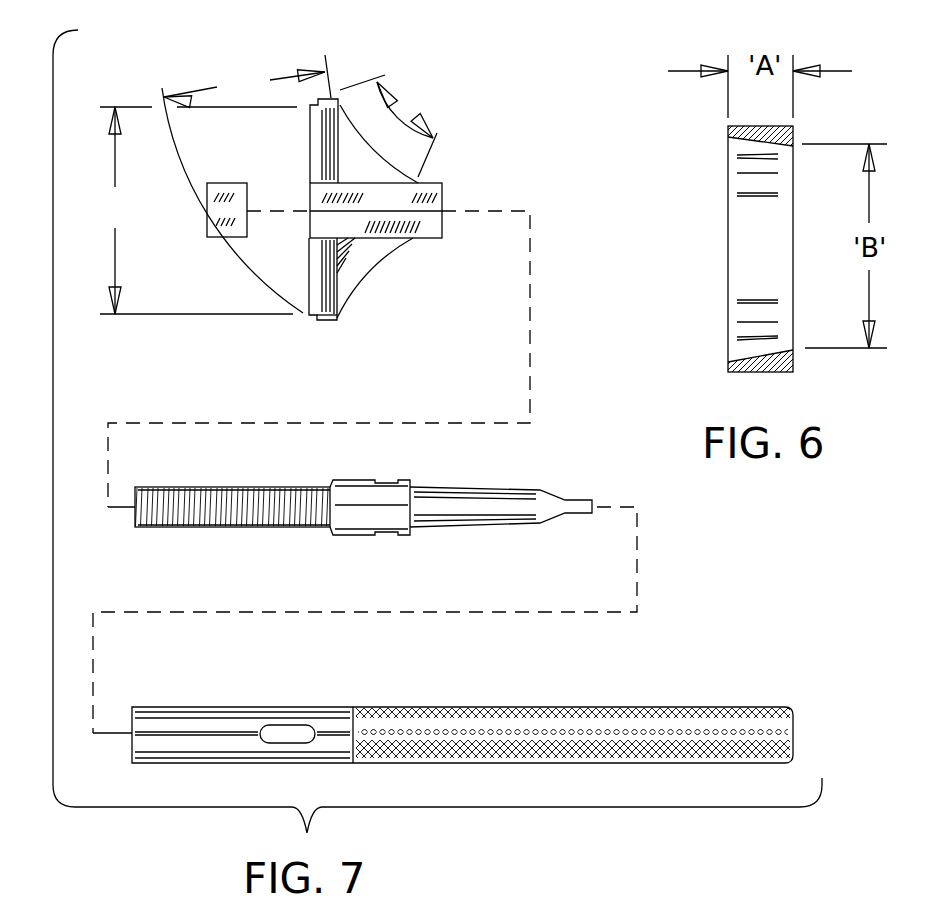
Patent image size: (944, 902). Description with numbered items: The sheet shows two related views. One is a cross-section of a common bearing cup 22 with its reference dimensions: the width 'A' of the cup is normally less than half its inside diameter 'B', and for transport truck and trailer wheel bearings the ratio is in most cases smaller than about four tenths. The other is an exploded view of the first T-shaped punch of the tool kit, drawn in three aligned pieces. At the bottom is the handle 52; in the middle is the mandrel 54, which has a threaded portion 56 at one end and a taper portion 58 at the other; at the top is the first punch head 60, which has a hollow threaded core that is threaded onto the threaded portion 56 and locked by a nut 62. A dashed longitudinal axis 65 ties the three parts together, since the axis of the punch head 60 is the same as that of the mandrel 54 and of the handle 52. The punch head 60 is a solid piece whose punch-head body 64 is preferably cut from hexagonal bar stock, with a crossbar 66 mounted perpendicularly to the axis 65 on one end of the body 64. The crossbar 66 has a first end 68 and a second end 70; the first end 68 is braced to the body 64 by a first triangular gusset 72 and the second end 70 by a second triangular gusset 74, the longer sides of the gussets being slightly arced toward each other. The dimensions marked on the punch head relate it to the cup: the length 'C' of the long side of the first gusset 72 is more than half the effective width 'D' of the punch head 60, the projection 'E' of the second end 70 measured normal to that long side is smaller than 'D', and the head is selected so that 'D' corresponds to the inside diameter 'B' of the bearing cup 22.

In FIG. 6, the bearing cup 22 is at (737, 240).
In FIG. 7, the handle 52 is at (570, 705).
In FIG. 7, the mandrel 54 is at (383, 492).
In FIG. 7, the threaded portion 56 is at (237, 527).
In FIG. 7, the taper portion 58 is at (458, 527).
In FIG. 7, the first punch head 60 is at (343, 207).
In FIG. 7, the nut 62 is at (213, 238).
In FIG. 7, the punch-head body 64 is at (435, 238).
In FIG. 7, the longitudinal axis 65 is at (493, 210).
In FIG. 7, the crossbar 66 is at (307, 270).
In FIG. 7, the first end 68 is at (327, 97).
In FIG. 7, the second end 70 is at (328, 322).
In FIG. 7, the first triangular gusset 72 is at (387, 163).
In FIG. 7, the second triangular gusset 74 is at (367, 273).